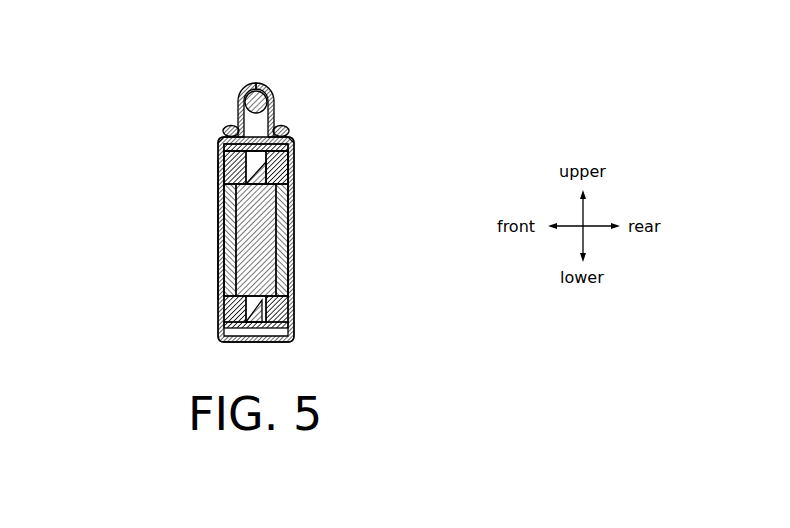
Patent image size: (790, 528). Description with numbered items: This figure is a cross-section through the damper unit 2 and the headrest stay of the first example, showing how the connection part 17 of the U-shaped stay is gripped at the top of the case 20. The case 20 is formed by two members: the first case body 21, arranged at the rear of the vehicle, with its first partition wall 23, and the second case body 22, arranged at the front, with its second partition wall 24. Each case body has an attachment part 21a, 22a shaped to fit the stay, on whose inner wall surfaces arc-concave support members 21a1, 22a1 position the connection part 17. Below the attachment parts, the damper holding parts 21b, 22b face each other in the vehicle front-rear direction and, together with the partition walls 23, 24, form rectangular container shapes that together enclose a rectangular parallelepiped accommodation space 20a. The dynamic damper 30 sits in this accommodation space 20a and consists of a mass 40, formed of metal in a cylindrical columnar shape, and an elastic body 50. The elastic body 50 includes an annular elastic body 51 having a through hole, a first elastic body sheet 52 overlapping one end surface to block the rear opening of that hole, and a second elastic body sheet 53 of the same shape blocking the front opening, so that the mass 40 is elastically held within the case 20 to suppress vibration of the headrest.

The damper unit 2 is at (392, 97).
The connection part 17 is at (257, 90).
The case 20 is at (291, 338).
The accommodation space 20a is at (218, 220).
The first case body 21 is at (296, 317).
The attachment part 21a is at (270, 96).
The support member 21a1 is at (286, 118).
The damper holding part 21b is at (294, 300).
The second case body 22 is at (220, 323).
The attachment part 22a is at (243, 96).
The support member 22a1 is at (228, 118).
The damper holding part 22b is at (222, 302).
The first partition wall 23 is at (290, 135).
The second partition wall 24 is at (222, 134).
The dynamic damper 30 is at (388, 192).
The mass 40 is at (290, 262).
The elastic body 50 is at (303, 200).
The annular elastic body 51 is at (290, 180).
The first elastic body sheet 52 is at (350, 174).
The second elastic body sheet 53 is at (262, 190).